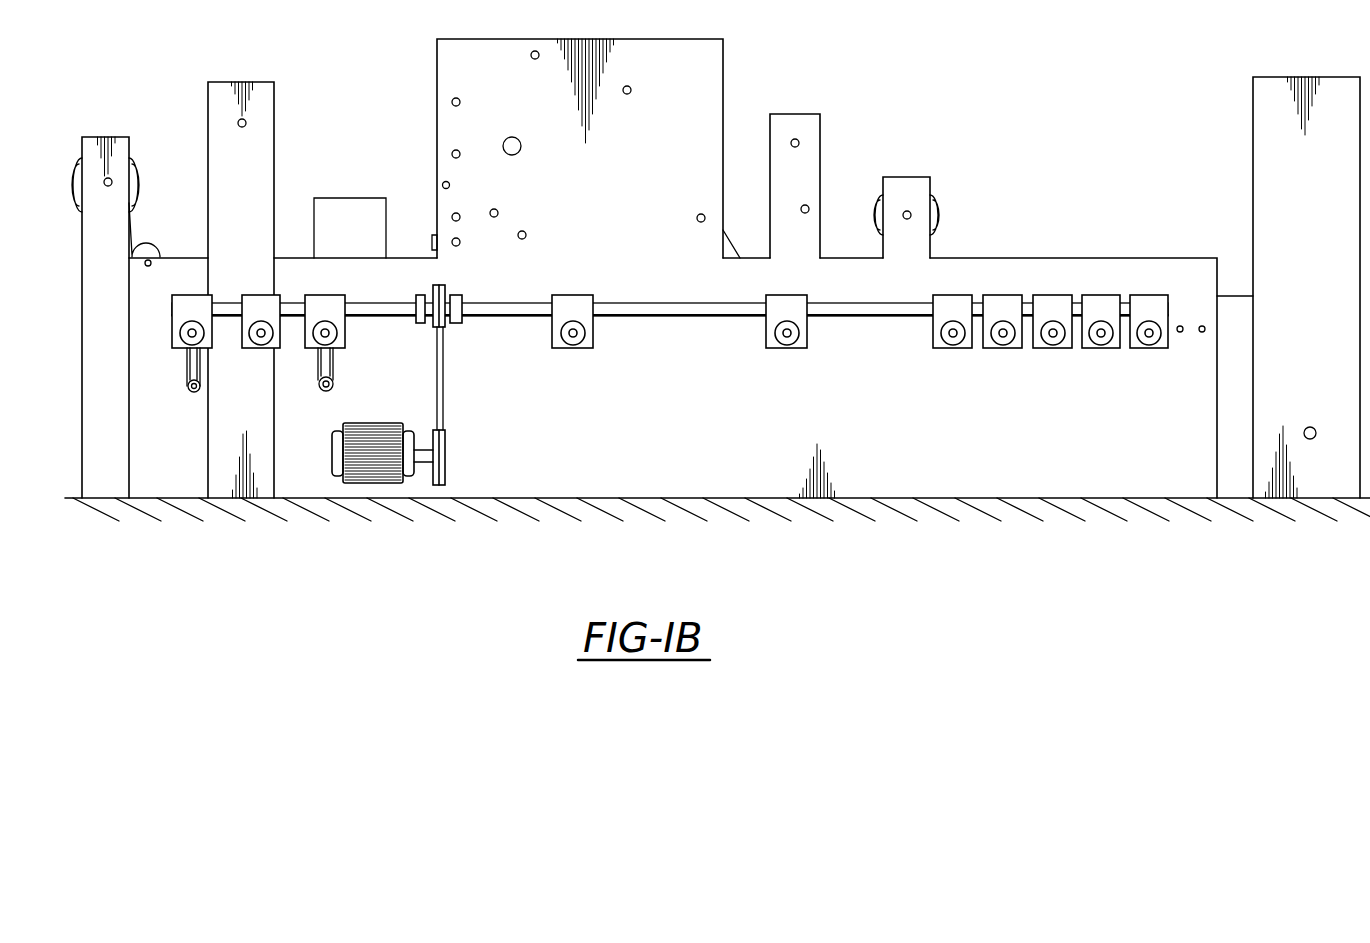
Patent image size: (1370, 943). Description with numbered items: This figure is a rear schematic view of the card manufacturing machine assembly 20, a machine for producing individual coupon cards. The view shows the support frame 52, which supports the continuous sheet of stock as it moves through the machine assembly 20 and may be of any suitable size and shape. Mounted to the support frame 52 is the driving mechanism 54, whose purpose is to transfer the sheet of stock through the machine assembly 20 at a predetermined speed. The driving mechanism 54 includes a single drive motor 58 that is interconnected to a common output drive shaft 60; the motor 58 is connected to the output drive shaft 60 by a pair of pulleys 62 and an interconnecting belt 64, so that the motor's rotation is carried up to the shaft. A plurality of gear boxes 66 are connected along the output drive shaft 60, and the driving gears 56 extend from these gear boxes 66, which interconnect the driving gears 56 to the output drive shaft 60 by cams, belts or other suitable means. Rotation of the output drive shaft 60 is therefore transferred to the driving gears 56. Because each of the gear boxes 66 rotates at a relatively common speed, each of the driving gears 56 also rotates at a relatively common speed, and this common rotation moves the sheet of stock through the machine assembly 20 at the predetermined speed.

The card manufacturing machine assembly 20 is at (893, 125).
The support frame 52 is at (932, 485).
The driving mechanism 54 is at (478, 441).
The driving gears 56 is at (190, 391).
The drive motor 58 is at (366, 486).
The output drive shaft 60 is at (398, 302).
The pulleys 62 is at (445, 292).
The interconnecting belt 64 is at (437, 385).
The gear boxes 66 is at (190, 297).